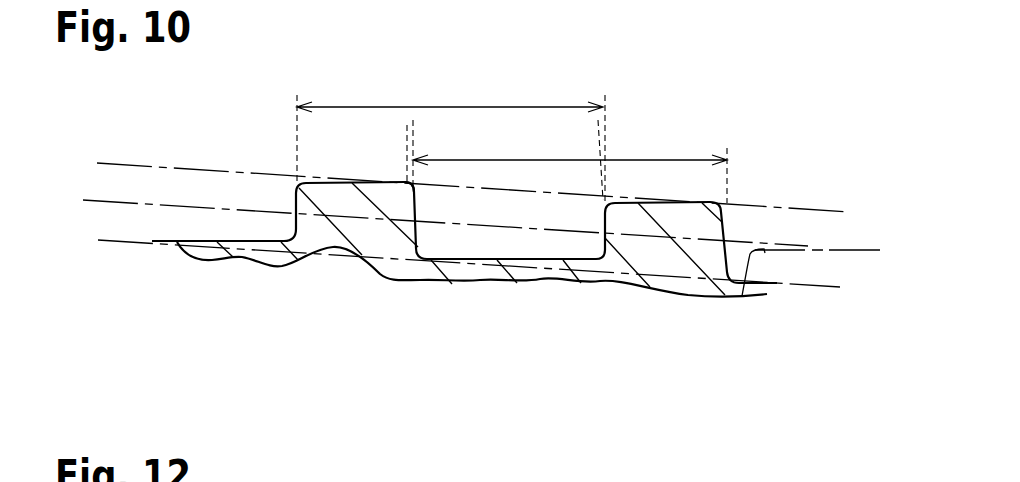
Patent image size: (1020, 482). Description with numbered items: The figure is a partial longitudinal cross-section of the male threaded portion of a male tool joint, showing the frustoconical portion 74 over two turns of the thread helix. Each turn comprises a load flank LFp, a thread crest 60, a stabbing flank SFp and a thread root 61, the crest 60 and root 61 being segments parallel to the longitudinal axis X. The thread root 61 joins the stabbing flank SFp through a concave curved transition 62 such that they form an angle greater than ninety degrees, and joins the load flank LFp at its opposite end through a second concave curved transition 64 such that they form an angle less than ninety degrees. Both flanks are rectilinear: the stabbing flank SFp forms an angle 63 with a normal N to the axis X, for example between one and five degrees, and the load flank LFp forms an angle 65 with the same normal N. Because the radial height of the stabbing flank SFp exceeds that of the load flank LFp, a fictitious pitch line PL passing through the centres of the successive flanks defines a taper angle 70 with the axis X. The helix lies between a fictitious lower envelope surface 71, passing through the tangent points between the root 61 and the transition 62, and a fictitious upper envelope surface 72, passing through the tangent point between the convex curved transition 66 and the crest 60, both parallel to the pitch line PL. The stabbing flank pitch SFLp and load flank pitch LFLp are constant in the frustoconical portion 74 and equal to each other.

The thread crest 60 is at (353, 182).
The thread root 61 is at (543, 259).
The concave curved transition 62 is at (417, 254).
The angle 63 is at (407, 123).
The second concave curved transition 64 is at (628, 281).
The angle 65 is at (605, 130).
The convex curved transition 66 is at (417, 186).
The taper angle 70 is at (757, 283).
The fictitious lower envelope surface 71 is at (804, 286).
The fictitious upper envelope surface 72 is at (757, 206).
The frustoconical portion 74 is at (755, 129).
The normal N is at (416, 141).
The pitch line PL is at (793, 244).
The longitudinal axis X is at (817, 253).
The pitch of the load flank LFLp is at (451, 141).
The pitch of the stabbing flank SFLp is at (570, 169).
The stabbing flank SFp is at (418, 253).
The load flank LFp is at (604, 254).